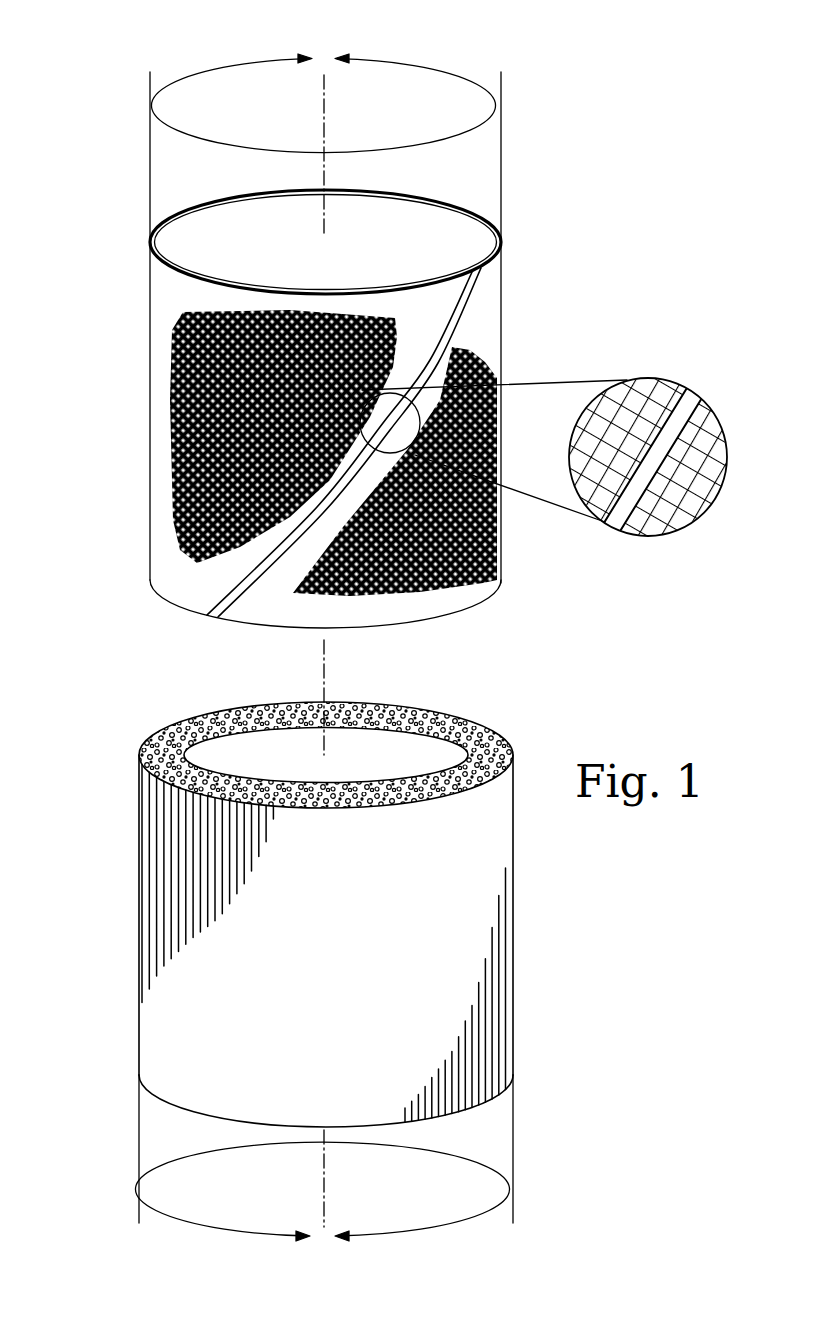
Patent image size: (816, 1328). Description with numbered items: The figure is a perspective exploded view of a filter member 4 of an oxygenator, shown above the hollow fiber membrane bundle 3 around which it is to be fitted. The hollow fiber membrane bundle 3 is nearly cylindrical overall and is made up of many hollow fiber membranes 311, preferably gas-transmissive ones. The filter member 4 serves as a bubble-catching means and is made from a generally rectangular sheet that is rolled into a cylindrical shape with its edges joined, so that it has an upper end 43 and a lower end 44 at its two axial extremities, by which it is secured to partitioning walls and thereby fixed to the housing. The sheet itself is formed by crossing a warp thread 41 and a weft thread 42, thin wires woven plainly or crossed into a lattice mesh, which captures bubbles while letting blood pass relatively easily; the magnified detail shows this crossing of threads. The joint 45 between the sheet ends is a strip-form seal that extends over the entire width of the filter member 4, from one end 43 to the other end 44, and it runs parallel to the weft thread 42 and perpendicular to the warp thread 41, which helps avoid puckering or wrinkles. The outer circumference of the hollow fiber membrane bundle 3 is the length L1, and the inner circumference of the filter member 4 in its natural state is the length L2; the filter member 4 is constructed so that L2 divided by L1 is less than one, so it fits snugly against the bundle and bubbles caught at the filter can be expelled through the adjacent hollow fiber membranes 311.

The hollow fiber membrane bundle 3 is at (130, 857).
The hollow fiber membrane 311 is at (177, 750).
The filter member 4 is at (140, 407).
The warp thread 41 is at (180, 520).
The weft thread 42 is at (173, 347).
The upper end of filter member 43 is at (450, 207).
The lower end of filter member 44 is at (467, 610).
The joint 45 is at (448, 325).
The outer circumference of hollow fiber membrane bundle L1 is at (467, 1157).
The inner circumference of filter member L2 is at (407, 62).